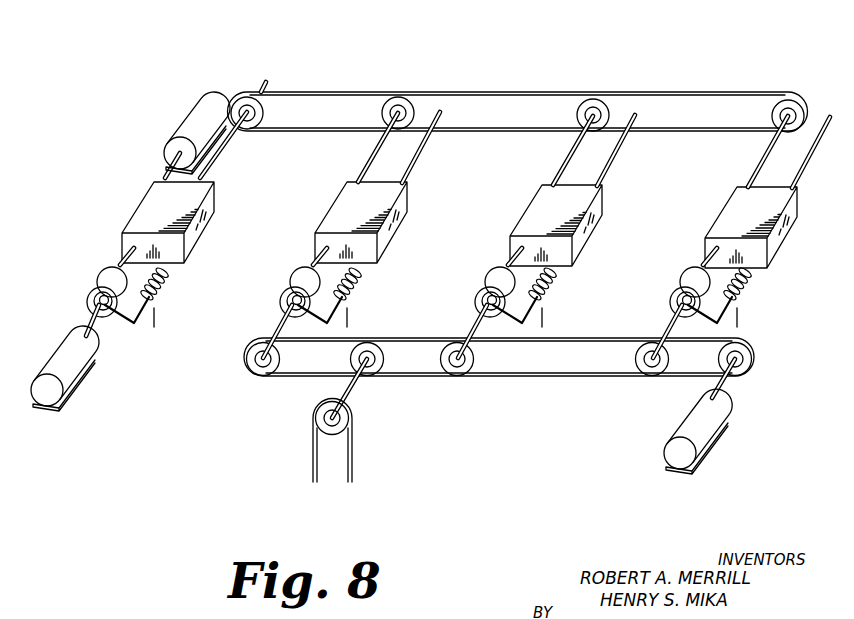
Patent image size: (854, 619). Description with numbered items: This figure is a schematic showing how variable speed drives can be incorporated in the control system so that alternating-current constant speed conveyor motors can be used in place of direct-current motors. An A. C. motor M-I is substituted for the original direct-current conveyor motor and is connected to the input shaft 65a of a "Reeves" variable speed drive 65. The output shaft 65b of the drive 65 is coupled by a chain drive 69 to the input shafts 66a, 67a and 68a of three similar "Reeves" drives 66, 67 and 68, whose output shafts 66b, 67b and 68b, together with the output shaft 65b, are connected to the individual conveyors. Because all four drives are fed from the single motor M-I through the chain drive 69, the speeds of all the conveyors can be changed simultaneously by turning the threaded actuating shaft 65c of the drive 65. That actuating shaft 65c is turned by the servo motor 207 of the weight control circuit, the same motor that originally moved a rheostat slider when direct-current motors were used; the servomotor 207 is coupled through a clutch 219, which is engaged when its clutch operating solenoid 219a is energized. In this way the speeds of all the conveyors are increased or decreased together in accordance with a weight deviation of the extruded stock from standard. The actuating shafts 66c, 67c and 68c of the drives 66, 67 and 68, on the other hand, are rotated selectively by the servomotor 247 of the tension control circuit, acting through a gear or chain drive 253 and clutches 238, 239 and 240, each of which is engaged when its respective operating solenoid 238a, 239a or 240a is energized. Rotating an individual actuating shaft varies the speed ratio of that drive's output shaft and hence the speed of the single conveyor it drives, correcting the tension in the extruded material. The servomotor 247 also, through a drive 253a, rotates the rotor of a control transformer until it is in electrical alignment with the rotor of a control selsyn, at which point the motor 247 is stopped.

The A. C. motor M-I is at (195, 106).
The Reeves drive 65 is at (187, 187).
The input shaft 65a is at (128, 163).
The output shaft 65b is at (297, 70).
The threaded actuating shaft 65c is at (93, 249).
The Reeves drive 66 is at (393, 190).
The input shaft 66a is at (383, 138).
The output shaft 66b is at (420, 140).
The actuating shaft 66c is at (313, 263).
The Reeves drive 67 is at (580, 224).
The input shaft 67a is at (544, 150).
The output shaft 67b is at (641, 150).
The actuating shaft 67c is at (490, 249).
The Reeves drive 68 is at (769, 227).
The input shaft 68a is at (742, 151).
The output shaft 68b is at (819, 157).
The actuating shaft 68c is at (684, 250).
The chain drive 69 is at (348, 92).
The servomotor 207 is at (91, 358).
The clutch 219 is at (160, 298).
The clutch operating solenoid 219a is at (79, 290).
The clutch 238 is at (353, 288).
The operating solenoid 238a is at (300, 277).
The clutch 239 is at (550, 298).
The operating solenoid 239a is at (466, 311).
The clutch 240 is at (744, 299).
The operating solenoid 240a is at (658, 312).
The servomotor 247 is at (717, 410).
The gear or chain drive 253 is at (550, 378).
The drive 253a is at (349, 462).